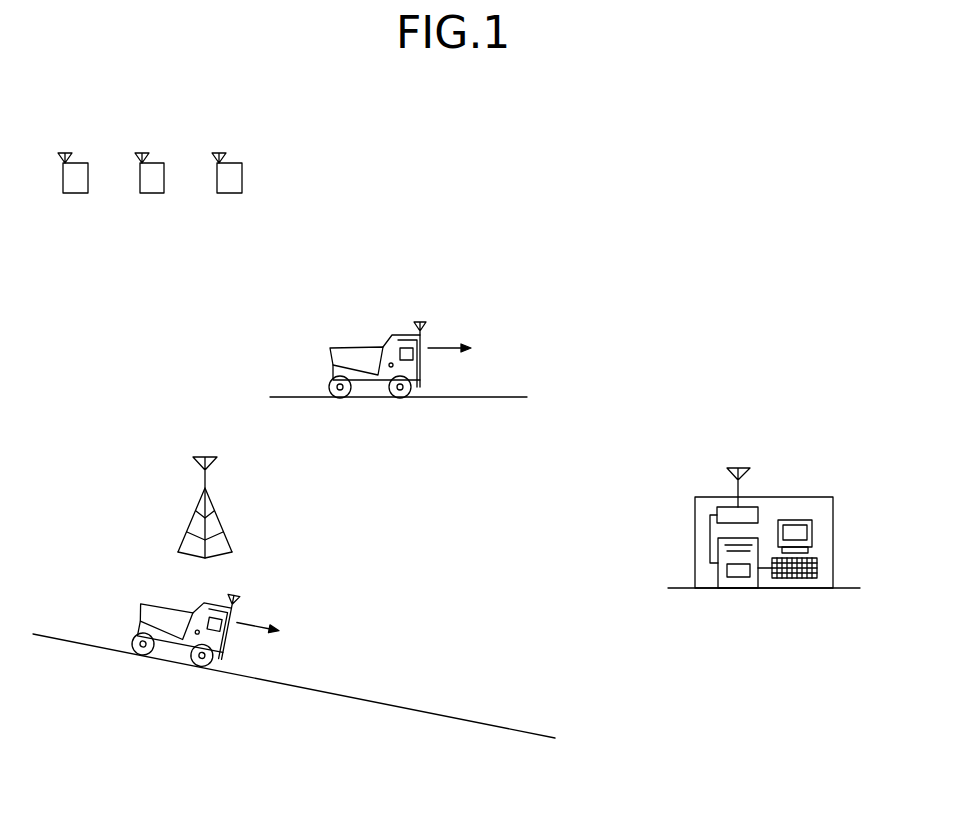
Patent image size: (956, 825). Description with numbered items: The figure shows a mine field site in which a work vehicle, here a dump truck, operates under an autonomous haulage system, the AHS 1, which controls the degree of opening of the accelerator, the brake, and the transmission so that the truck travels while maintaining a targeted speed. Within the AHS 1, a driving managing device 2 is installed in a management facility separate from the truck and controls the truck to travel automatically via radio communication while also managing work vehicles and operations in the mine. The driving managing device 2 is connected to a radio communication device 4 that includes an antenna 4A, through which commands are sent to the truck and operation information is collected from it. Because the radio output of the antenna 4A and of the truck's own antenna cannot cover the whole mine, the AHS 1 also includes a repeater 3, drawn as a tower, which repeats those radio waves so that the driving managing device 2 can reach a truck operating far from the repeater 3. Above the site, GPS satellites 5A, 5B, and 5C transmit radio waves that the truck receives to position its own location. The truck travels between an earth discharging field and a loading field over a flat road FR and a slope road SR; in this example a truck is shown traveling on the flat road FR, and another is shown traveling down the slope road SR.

The AHS (Autonomous Haulage System) 1 is at (712, 157).
The driving managing device 2 is at (759, 505).
The repeater 3 is at (176, 496).
The radio communication device 4 is at (715, 508).
The antenna 4A is at (739, 467).
The GPS satellite 5A is at (76, 195).
The GPS satellite 5B is at (154, 195).
The GPS satellite 5C is at (231, 195).
The flat road FR is at (507, 397).
The slope road SR is at (462, 718).